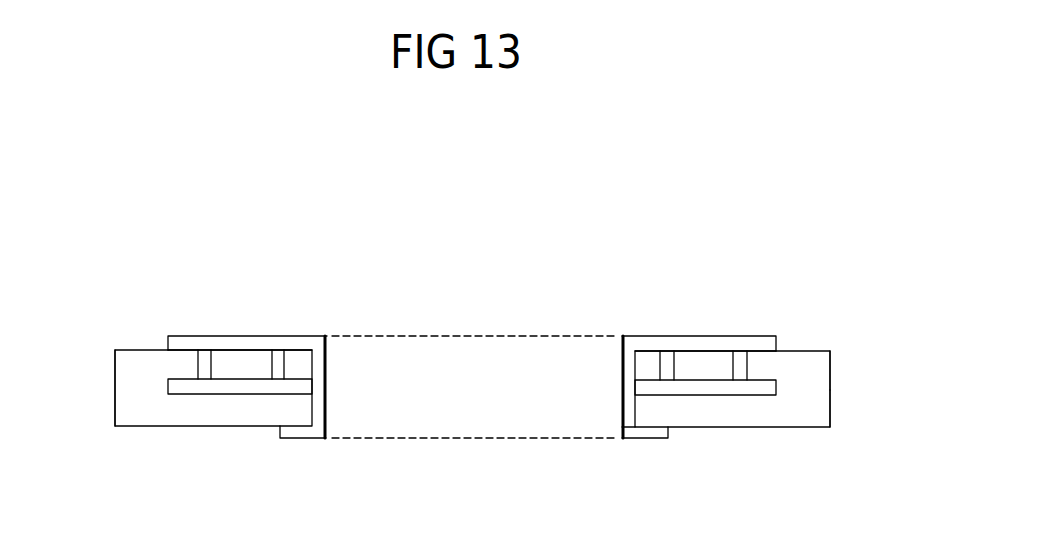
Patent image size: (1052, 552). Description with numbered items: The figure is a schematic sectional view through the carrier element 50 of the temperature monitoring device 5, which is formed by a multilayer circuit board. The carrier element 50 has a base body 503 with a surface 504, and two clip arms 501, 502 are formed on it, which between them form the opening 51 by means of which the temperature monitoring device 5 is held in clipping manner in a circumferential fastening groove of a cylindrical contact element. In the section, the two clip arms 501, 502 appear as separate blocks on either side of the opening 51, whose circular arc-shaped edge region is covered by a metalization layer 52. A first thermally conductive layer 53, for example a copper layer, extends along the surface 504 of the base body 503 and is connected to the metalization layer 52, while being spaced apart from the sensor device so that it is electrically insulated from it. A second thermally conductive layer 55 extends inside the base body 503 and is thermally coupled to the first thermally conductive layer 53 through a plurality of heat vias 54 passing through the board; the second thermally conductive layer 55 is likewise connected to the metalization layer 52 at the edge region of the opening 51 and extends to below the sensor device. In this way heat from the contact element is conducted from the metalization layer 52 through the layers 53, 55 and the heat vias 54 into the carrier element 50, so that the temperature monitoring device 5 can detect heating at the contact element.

The temperature monitoring device 5 is at (840, 323).
The carrier element 50 is at (157, 427).
The opening 51 is at (476, 405).
The metalization layer 52 is at (609, 424).
The first thermally conductive layer 53 is at (697, 337).
The heat vias 54 is at (665, 356).
The second thermally conductive layer 55 is at (708, 395).
The clip arm 501 is at (832, 395).
The clip arm 502 is at (115, 407).
The base body 503 is at (832, 373).
The surface 504 is at (143, 350).